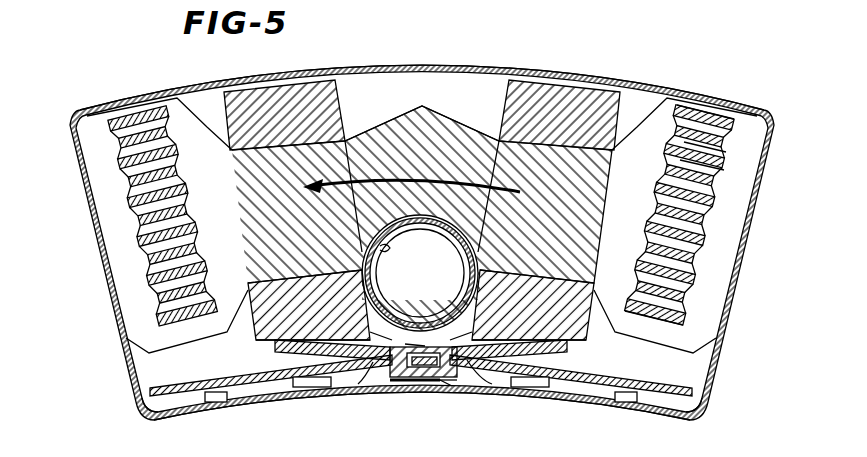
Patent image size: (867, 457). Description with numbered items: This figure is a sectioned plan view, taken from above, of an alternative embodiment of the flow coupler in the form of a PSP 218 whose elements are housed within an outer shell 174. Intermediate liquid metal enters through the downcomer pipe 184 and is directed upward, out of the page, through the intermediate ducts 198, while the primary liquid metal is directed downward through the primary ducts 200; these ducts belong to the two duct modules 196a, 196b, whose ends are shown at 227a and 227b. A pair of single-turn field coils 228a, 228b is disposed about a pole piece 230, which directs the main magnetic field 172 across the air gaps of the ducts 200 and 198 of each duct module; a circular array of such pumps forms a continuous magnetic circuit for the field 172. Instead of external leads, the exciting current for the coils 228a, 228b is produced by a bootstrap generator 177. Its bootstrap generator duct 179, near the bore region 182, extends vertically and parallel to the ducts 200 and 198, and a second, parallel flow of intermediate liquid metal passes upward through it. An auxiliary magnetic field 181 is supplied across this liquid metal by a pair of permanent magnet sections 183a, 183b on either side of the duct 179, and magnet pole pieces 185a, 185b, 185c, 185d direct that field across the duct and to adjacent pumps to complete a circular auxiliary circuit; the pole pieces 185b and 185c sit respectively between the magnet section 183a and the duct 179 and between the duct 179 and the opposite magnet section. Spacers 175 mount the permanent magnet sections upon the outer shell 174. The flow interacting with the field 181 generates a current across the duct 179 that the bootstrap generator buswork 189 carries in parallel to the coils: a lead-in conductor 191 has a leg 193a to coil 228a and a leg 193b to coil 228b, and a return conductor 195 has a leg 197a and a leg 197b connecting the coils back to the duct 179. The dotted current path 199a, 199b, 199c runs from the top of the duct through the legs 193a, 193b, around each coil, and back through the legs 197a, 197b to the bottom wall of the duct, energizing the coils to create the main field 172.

The main magnetic field 172 is at (427, 178).
The outer shell 174 is at (430, 68).
The spacers 175 is at (248, 404).
The bootstrap generator 177 is at (324, 368).
The bootstrap generator duct 179 is at (418, 362).
The auxiliary magnetic field 181 is at (505, 368).
The bore 182 is at (468, 238).
The permanent magnet section 183a is at (190, 385).
The permanent magnet section 183b is at (600, 388).
The downcomer pipe 184 is at (368, 244).
The magnet pole piece 185a is at (148, 413).
The magnet pole piece 185b is at (380, 372).
The magnet pole piece 185c is at (460, 377).
The magnet pole piece 185d is at (685, 414).
The bootstrap generator buswork 189 is at (393, 383).
The lead-in conductor 191 is at (415, 344).
The conductor leg 193a is at (380, 330).
The conductor leg 193b is at (462, 332).
The return conductor 195 is at (435, 376).
The duct module 196a is at (174, 86).
The duct module 196b is at (767, 100).
The conductor leg 197a is at (290, 345).
The conductor leg 197b is at (560, 346).
The intermediate ducts 198 is at (707, 155).
The current path 199a is at (445, 385).
The current path 199b is at (362, 292).
The current path 199c is at (313, 330).
The primary ducts 200 is at (720, 140).
The PSP 218 is at (612, 52).
The bellows upper end 227a is at (715, 118).
The bellows lower end 227b is at (660, 327).
The field coil 228a is at (305, 84).
The field coil 228b is at (535, 80).
The pole piece 230 is at (462, 106).